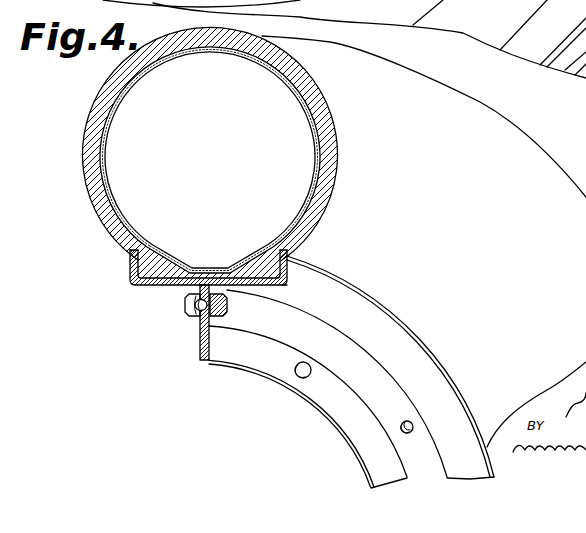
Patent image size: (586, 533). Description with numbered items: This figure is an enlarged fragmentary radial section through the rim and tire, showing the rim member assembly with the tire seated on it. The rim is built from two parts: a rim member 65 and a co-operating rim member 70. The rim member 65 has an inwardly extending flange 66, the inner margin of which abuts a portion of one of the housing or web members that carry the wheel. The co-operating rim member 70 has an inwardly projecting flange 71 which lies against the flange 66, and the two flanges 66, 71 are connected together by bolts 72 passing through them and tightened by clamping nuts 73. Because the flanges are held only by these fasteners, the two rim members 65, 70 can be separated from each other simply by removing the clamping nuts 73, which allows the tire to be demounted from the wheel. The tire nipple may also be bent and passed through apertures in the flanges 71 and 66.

The rim member 65 is at (150, 291).
The inwardly extending flange 66 is at (201, 349).
The co-operating rim member 70 is at (278, 283).
The inwardly projecting flange 71 is at (210, 328).
The bolts 72 is at (198, 310).
The clamping nuts 73 is at (185, 306).